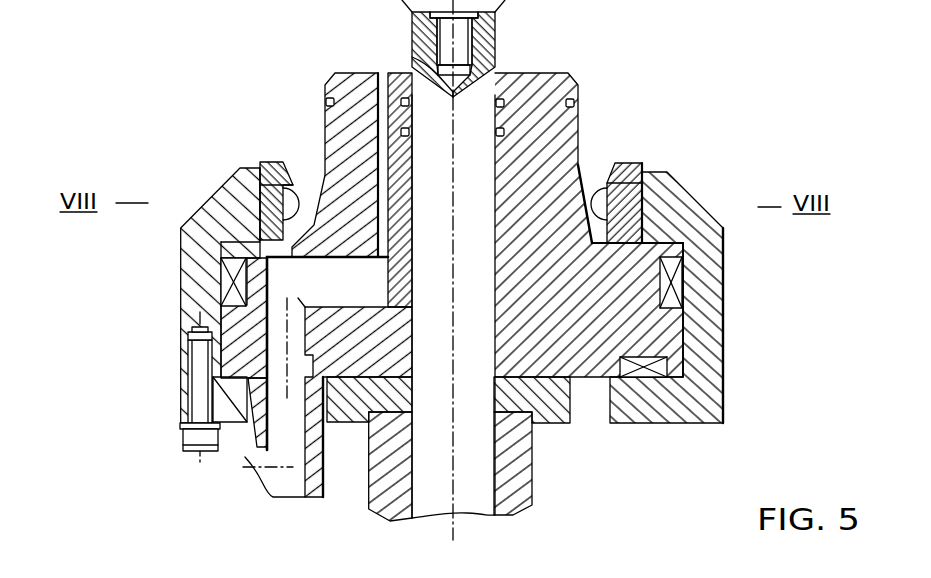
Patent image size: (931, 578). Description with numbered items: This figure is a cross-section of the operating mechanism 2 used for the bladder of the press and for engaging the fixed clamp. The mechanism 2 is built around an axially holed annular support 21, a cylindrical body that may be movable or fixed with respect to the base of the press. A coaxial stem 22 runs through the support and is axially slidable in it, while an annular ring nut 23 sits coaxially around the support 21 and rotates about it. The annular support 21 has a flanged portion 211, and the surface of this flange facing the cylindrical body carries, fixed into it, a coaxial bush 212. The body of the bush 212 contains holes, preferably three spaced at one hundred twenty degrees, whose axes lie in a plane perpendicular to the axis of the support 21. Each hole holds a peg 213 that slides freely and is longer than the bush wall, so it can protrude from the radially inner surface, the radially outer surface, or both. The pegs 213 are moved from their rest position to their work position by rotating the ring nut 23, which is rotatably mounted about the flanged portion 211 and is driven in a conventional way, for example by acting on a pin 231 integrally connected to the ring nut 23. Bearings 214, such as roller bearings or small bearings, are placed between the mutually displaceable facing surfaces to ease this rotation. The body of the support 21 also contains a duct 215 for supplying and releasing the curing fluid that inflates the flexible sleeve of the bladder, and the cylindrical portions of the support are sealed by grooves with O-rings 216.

The operating mechanism 2 is at (702, 75).
The annular support 21 is at (480, 153).
The stem 22 is at (550, 152).
The ring nut 23 is at (675, 230).
The flanged portion 211 is at (632, 345).
The bush 212 is at (268, 165).
The peg 213 is at (262, 208).
The bearings 214 is at (673, 295).
The duct 215 is at (307, 280).
The O-rings 216 is at (326, 102).
The pin 231 is at (185, 437).